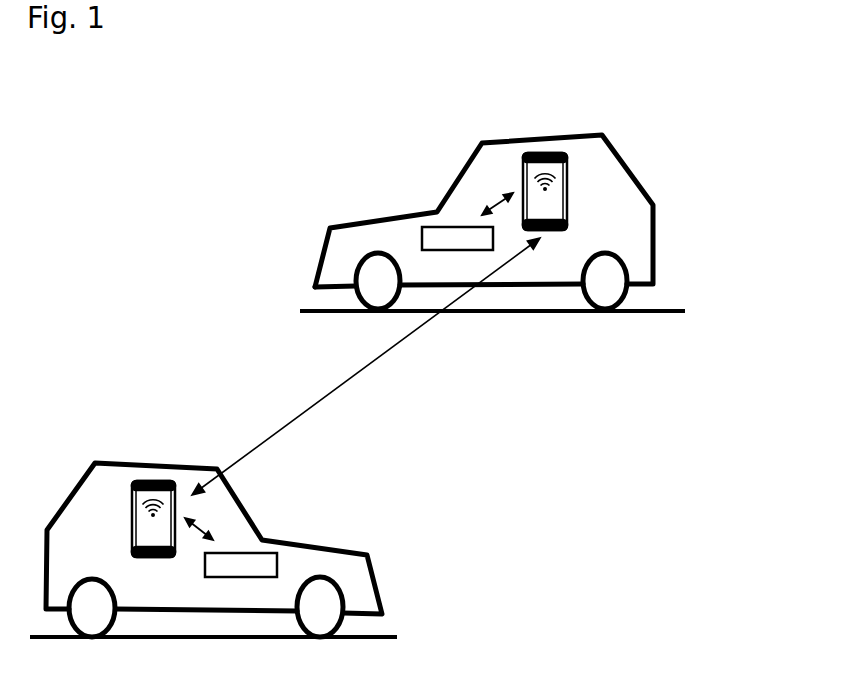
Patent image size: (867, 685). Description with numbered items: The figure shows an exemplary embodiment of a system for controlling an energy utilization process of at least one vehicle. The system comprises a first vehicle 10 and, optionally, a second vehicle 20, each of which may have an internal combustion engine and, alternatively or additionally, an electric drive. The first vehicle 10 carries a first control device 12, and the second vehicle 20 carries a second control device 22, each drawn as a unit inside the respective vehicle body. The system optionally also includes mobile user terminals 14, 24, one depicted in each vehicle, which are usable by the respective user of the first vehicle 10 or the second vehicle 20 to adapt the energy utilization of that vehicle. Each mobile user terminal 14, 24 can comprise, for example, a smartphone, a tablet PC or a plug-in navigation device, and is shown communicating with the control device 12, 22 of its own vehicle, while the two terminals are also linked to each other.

The first vehicle 10 is at (632, 170).
The first control device 12 is at (414, 212).
The mobile user terminal 14 is at (530, 155).
The second vehicle 20 is at (327, 547).
The second control device 22 is at (257, 560).
The mobile user terminal 24 is at (137, 483).